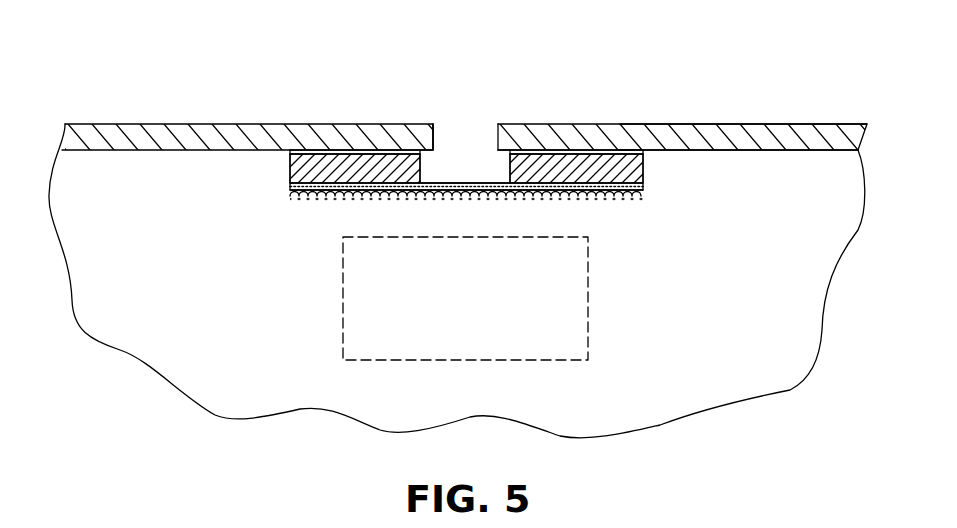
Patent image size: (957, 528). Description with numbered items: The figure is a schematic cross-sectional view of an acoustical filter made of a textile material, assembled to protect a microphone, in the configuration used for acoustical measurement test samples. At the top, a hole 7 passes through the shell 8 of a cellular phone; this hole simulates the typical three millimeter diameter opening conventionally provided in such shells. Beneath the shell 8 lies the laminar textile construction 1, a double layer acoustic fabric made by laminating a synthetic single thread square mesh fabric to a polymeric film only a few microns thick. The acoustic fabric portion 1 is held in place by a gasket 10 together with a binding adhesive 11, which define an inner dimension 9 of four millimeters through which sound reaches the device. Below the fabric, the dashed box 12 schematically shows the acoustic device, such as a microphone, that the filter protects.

The laminar textile construction 1 is at (352, 195).
The hole 7 is at (479, 134).
The shell 8 is at (658, 132).
The inner dimension 9 is at (457, 172).
The gasket 10 is at (305, 163).
The binding adhesive 11 is at (288, 151).
The dashed box 12 is at (555, 330).